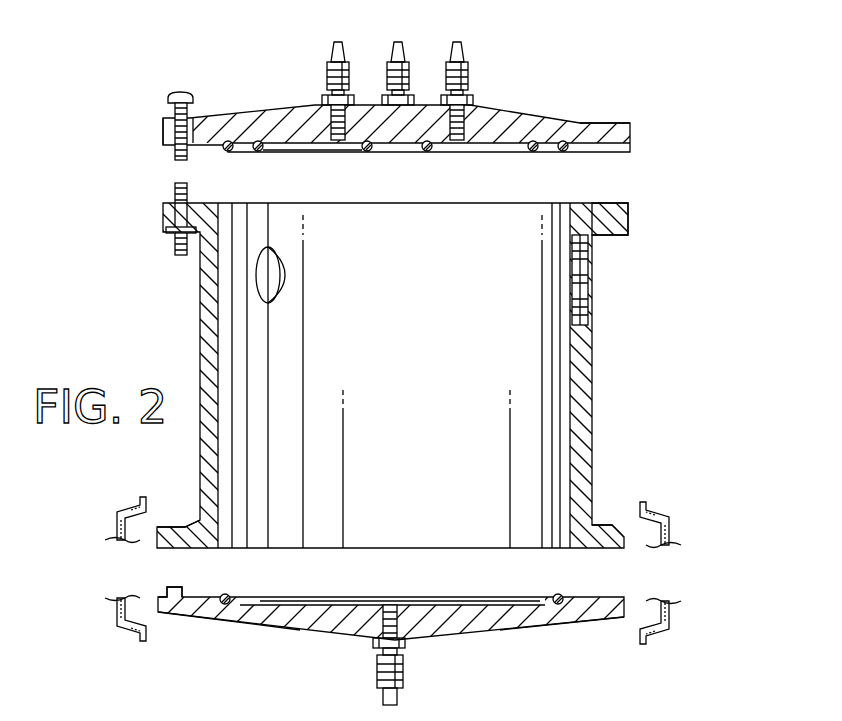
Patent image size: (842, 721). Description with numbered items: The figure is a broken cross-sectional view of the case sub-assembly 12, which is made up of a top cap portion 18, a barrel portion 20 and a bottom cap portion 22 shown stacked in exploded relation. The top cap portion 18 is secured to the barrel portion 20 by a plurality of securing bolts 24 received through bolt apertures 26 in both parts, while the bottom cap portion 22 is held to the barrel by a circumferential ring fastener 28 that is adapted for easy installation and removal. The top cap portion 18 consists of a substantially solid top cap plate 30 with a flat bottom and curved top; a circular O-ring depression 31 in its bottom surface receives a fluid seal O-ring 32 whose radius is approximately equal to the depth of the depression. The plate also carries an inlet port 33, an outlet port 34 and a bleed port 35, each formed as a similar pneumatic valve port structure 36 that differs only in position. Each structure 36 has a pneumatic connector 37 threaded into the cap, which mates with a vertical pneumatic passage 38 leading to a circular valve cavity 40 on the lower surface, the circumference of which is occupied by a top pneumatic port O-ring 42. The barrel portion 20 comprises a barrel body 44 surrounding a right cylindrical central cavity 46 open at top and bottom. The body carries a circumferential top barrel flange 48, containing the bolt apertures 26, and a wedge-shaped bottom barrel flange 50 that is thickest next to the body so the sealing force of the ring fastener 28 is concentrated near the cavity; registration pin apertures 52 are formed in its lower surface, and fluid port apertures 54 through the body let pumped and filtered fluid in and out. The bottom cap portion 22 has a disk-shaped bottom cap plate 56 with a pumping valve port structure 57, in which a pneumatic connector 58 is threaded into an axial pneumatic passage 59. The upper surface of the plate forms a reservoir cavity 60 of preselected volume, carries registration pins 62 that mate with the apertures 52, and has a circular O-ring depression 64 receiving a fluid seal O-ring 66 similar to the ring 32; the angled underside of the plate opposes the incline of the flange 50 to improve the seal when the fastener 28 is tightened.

The case sub-assembly 12 is at (712, 243).
The top cap portion 18 is at (248, 105).
The barrel portion 20 is at (597, 372).
The bottom cap portion 22 is at (508, 650).
The securing bolt 24 is at (178, 99).
The bolt aperture 26 is at (178, 150).
The circumferential ring fastener 28 is at (114, 520).
The top cap plate 30 is at (163, 130).
The O-ring depression 31 is at (582, 124).
The fluid seal O-ring 32 is at (548, 148).
The inlet port 33 is at (412, 58).
The outlet port 34 is at (325, 72).
The bleed port 35 is at (482, 78).
The pneumatic valve port structure 36 is at (338, 42).
The pneumatic connector 37 is at (396, 50).
The pneumatic passage 38 is at (340, 147).
The valve cavity 40 is at (293, 147).
The top pneumatic port O-ring 42 is at (364, 147).
The barrel body 44 is at (200, 322).
The central cavity 46 is at (348, 365).
The top barrel flange 48 is at (630, 224).
The bottom barrel flange 50 is at (612, 528).
The registration pin aperture 52 is at (183, 526).
The fluid port aperture 54 is at (265, 272).
The bottom cap plate 56 is at (280, 645).
The pumping valve port structure 57 is at (400, 700).
The pneumatic connector 58 is at (383, 672).
The pneumatic passage 59 is at (390, 605).
The reservoir cavity 60 is at (345, 598).
The registration pin 62 is at (172, 588).
The O-ring depression 64 is at (555, 612).
The fluid seal O-ring 66 is at (560, 598).